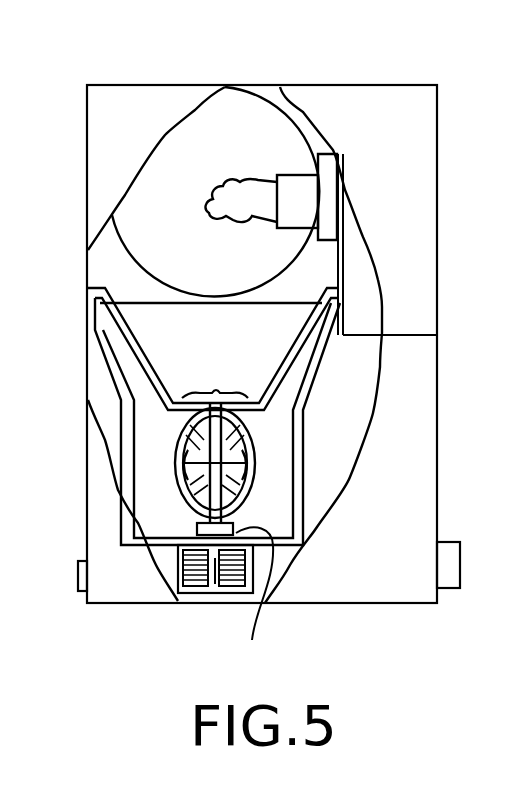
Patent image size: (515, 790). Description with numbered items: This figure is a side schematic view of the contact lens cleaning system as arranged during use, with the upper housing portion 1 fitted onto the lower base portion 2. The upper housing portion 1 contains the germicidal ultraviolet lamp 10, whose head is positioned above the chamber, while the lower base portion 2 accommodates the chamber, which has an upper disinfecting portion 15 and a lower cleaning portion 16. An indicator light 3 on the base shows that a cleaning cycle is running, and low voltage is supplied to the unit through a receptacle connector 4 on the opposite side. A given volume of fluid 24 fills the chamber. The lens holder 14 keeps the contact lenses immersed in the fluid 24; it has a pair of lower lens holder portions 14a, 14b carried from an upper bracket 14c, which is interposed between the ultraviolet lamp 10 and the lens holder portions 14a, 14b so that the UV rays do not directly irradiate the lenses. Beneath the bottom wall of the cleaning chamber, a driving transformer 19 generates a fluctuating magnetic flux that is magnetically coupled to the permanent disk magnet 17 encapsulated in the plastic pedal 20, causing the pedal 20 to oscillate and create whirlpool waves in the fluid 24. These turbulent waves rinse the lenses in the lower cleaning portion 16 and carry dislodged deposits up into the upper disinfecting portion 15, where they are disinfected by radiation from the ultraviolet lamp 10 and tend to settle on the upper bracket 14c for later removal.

The upper housing portion 1 is at (422, 150).
The lower base portion 2 is at (427, 397).
The indicator light 3 is at (77, 578).
The receptacle connector 4 is at (461, 549).
The ultraviolet lamp 10 is at (212, 118).
The lens holder 14 is at (147, 318).
The lower lens holder portion 14a is at (180, 482).
The lower lens holder portion 14b is at (253, 485).
The upper bracket 14c is at (213, 370).
The upper disinfecting portion 15 is at (177, 350).
The lower cleaning portion 16 is at (148, 450).
The permanent disk magnet 17 is at (272, 595).
The driving transformer 19 is at (215, 580).
The magnetic pedal 20 is at (271, 597).
The fluid 24 is at (210, 263).